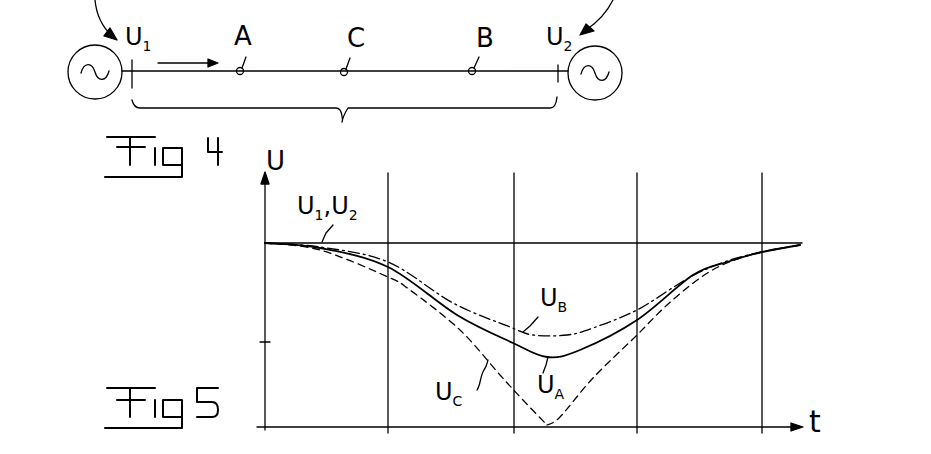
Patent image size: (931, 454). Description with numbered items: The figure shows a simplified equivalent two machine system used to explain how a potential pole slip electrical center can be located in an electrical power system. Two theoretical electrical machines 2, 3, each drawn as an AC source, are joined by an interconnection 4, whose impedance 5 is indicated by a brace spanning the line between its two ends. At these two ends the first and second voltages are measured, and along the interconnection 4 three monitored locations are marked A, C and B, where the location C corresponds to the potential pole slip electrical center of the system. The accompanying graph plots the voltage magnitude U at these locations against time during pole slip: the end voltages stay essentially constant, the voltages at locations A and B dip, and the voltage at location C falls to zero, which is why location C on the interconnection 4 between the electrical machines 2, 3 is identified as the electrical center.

The electrical machine 2 is at (87, 98).
The electrical machine 3 is at (622, 72).
The interconnection 4 is at (385, 71).
The impedance 5 is at (400, 108).